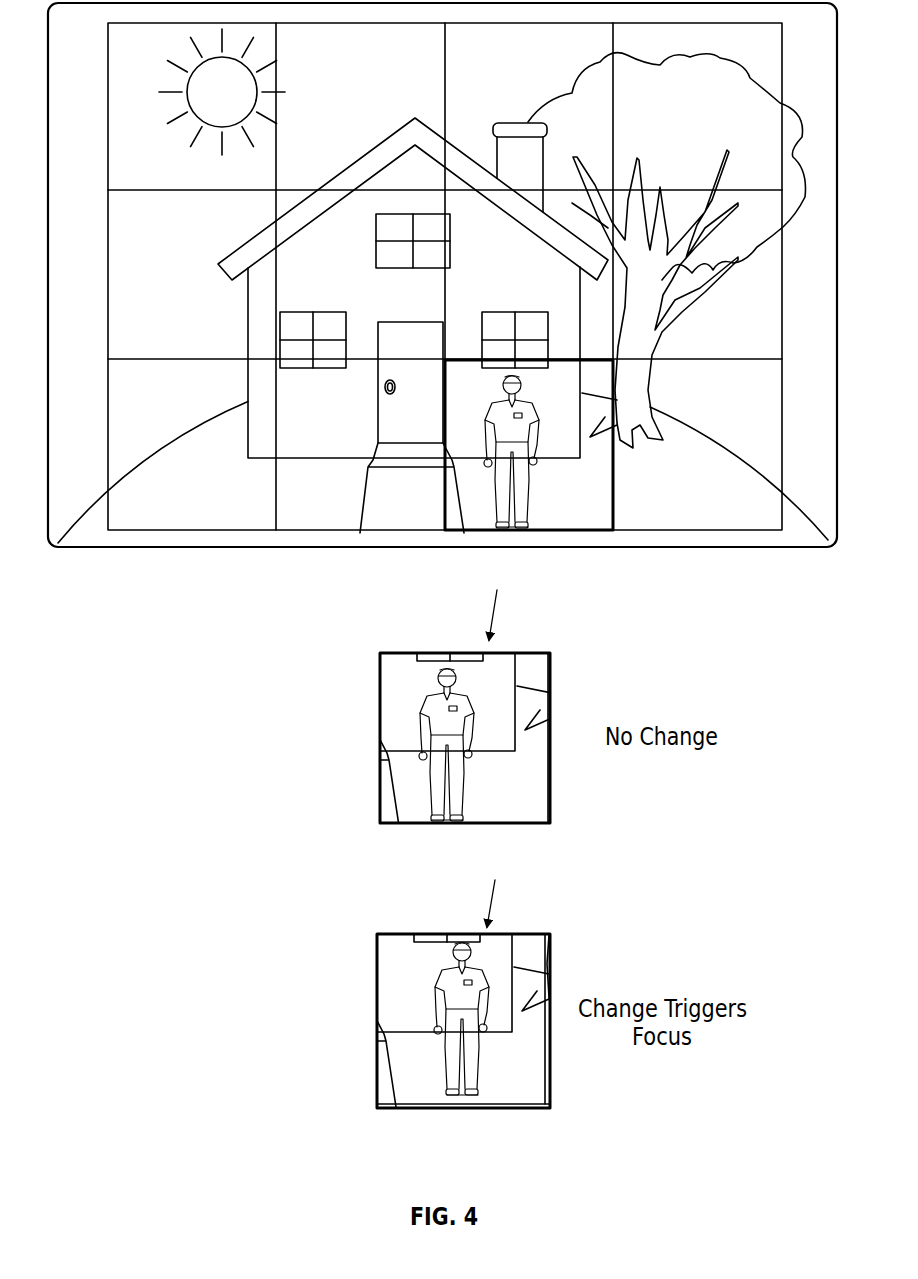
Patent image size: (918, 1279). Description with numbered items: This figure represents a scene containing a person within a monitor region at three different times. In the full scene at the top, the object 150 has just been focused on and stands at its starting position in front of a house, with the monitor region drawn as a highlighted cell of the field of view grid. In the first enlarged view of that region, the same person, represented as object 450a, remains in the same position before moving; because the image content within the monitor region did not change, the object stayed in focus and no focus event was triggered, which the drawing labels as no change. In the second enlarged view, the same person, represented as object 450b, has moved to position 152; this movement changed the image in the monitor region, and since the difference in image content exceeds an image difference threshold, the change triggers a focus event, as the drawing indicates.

The object 150 is at (498, 515).
The object 450a is at (435, 793).
The object 450b is at (448, 1077).
The position 152 is at (463, 1099).